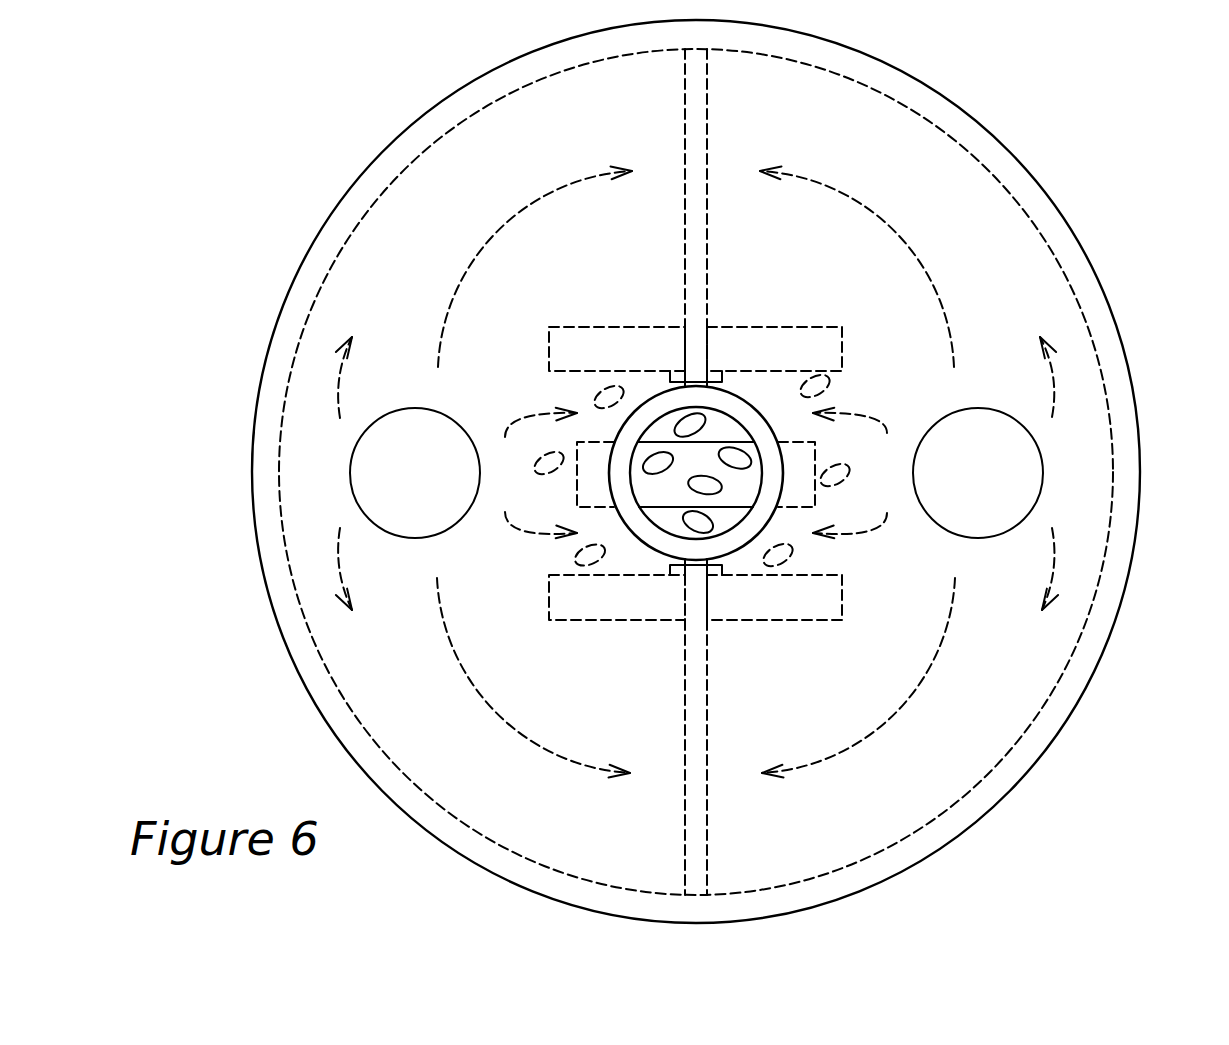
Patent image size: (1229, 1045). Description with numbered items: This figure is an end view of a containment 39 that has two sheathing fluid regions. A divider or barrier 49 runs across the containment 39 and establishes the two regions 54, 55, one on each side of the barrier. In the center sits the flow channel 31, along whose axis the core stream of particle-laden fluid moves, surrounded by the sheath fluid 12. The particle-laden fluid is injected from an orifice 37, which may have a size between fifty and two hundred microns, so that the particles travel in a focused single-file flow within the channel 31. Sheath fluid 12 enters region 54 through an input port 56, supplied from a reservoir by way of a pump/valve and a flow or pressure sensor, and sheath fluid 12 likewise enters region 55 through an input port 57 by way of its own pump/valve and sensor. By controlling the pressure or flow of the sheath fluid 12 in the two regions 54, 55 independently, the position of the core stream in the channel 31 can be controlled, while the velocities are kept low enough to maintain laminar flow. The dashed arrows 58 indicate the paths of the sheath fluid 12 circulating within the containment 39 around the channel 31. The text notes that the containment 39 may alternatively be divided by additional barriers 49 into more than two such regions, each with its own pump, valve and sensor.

The sheath fluid 12 is at (396, 492).
The flow channel 31 is at (818, 507).
The orifice 37 is at (773, 517).
The containment 39 is at (1133, 502).
The divider or barrier 49 is at (685, 103).
The region 54 is at (368, 386).
The region 55 is at (983, 387).
The input port 56 is at (350, 477).
The input port 57 is at (1043, 473).
The flow path 58 is at (487, 243).